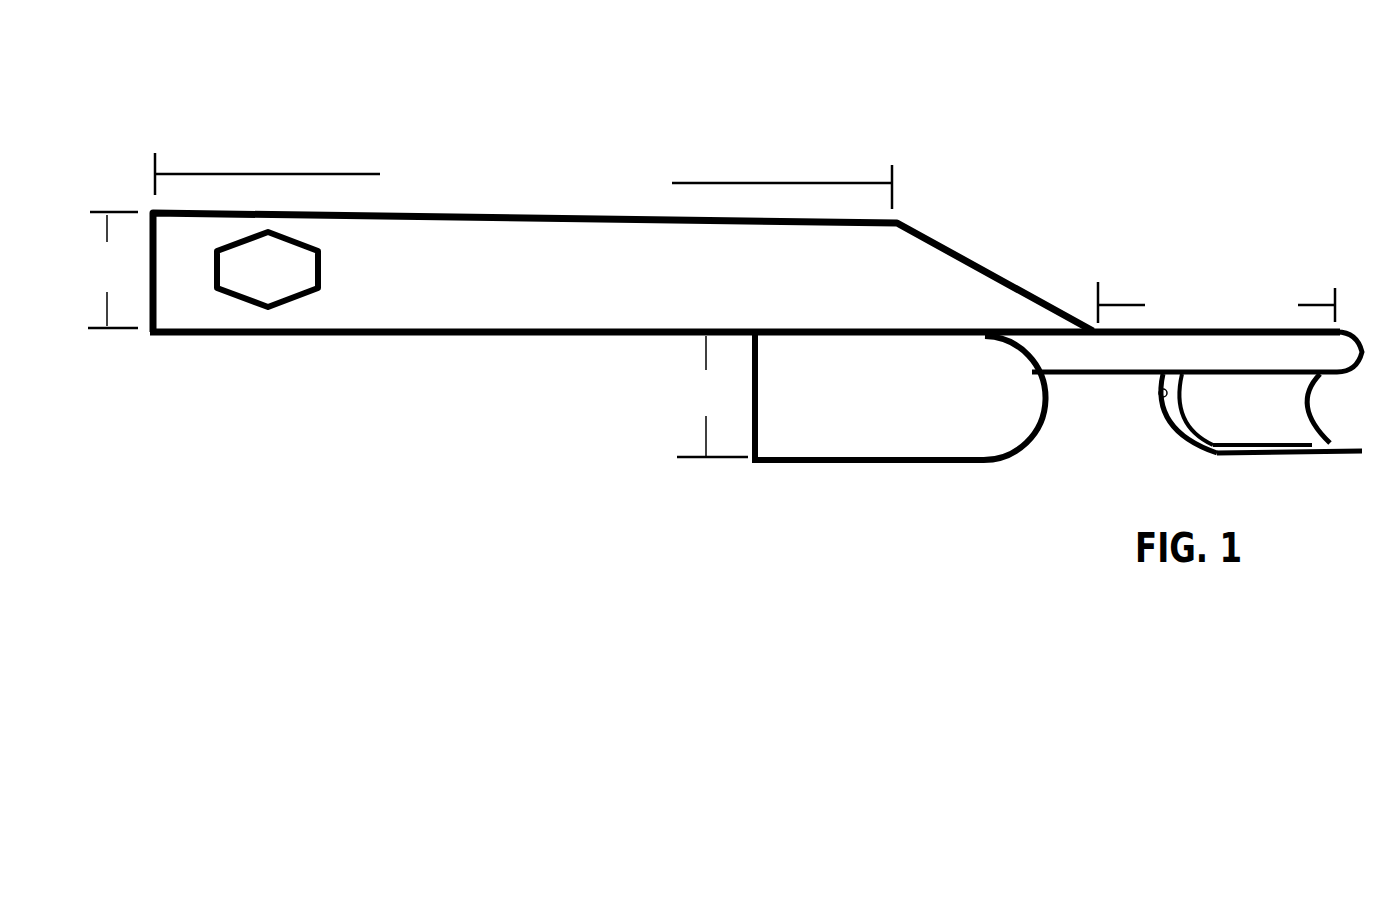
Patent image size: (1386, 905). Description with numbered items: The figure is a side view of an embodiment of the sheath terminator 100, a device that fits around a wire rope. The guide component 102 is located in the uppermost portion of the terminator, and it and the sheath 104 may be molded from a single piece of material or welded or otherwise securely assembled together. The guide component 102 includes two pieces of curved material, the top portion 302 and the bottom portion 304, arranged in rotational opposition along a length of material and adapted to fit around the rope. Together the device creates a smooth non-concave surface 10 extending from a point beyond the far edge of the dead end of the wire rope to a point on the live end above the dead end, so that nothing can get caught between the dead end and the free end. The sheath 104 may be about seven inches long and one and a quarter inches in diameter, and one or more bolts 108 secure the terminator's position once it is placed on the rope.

The smooth non-concave surface 10 is at (607, 218).
The sheath terminator 100 is at (530, 300).
The guide component 102 is at (862, 508).
The sheath 104 is at (492, 116).
The bolt 108 is at (292, 303).
The top portion 302 is at (1243, 398).
The bottom portion 304 is at (910, 380).